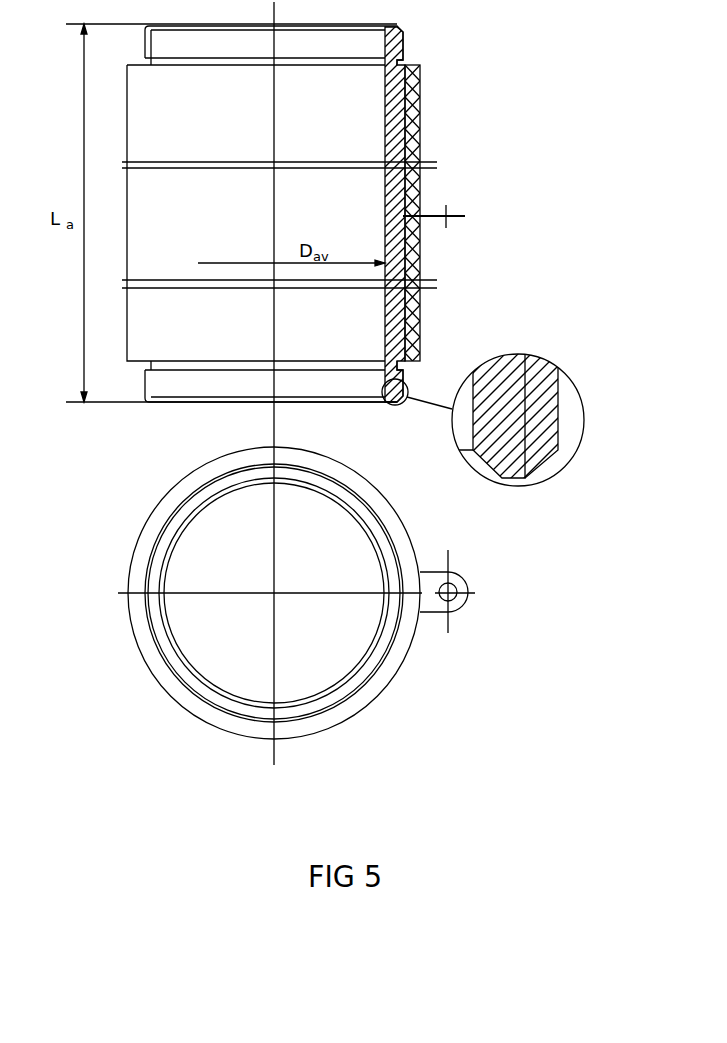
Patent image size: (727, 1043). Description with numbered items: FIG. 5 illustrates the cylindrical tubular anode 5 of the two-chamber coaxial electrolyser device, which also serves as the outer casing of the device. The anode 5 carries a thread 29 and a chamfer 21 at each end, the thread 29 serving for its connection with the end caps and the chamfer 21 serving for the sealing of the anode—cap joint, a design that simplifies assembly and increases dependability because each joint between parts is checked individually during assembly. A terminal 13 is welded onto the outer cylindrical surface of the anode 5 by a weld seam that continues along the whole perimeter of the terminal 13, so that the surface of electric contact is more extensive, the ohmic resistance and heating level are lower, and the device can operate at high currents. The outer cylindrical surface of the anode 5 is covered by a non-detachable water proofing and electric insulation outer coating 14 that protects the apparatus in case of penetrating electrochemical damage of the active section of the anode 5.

The anode 5 is at (397, 113).
The outer coating 14 is at (393, 152).
The terminal 13 is at (405, 216).
The thread 29 is at (515, 422).
The chamfer 21 is at (515, 422).